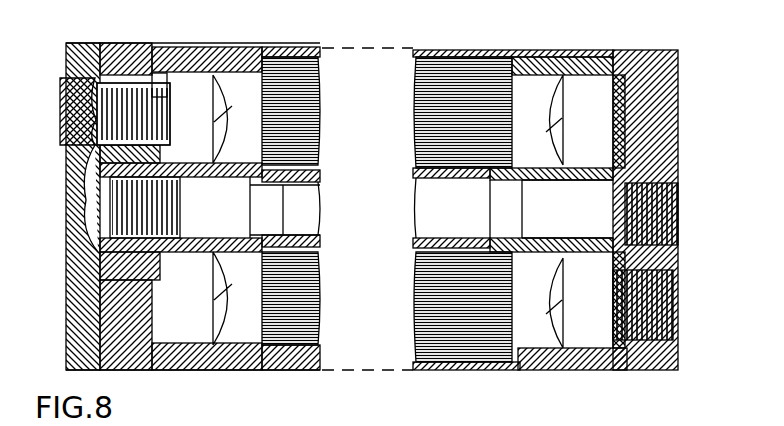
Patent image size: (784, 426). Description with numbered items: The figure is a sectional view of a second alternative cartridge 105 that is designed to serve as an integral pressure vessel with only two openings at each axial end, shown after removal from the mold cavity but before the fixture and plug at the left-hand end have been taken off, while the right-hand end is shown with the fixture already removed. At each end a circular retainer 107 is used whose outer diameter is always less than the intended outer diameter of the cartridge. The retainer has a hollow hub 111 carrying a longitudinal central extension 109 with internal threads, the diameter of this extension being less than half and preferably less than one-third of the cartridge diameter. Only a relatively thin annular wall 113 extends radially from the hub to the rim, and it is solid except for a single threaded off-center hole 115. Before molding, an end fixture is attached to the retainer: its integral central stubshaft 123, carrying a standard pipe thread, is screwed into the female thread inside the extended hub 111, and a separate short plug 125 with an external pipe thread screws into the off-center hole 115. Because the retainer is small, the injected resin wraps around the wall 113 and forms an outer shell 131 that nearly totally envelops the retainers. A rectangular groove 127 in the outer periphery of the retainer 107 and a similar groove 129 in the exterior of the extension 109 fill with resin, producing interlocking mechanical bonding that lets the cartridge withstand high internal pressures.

The cartridge 105 is at (422, 36).
The circular retainer 107 is at (200, 62).
The longitudinal central extension 109 is at (95, 190).
The hollow hub 111 is at (200, 195).
The annular wall 113 is at (155, 285).
The off-center hole 115 is at (162, 93).
The central stubshaft 123 is at (170, 212).
The plug 125 is at (60, 105).
The groove 127 is at (235, 372).
The groove 129 is at (678, 145).
The outer shell 131 is at (455, 50).